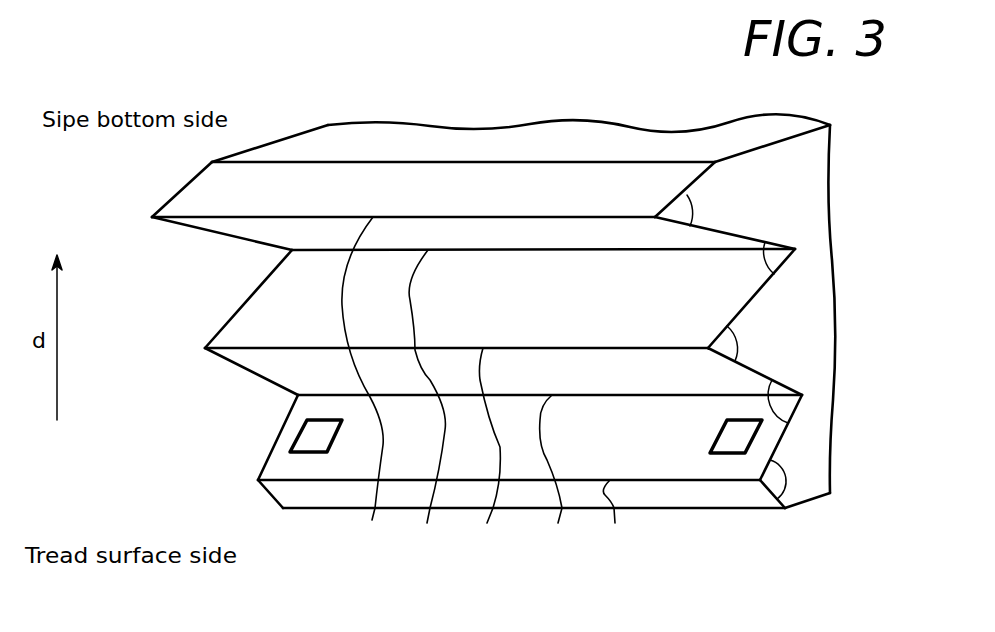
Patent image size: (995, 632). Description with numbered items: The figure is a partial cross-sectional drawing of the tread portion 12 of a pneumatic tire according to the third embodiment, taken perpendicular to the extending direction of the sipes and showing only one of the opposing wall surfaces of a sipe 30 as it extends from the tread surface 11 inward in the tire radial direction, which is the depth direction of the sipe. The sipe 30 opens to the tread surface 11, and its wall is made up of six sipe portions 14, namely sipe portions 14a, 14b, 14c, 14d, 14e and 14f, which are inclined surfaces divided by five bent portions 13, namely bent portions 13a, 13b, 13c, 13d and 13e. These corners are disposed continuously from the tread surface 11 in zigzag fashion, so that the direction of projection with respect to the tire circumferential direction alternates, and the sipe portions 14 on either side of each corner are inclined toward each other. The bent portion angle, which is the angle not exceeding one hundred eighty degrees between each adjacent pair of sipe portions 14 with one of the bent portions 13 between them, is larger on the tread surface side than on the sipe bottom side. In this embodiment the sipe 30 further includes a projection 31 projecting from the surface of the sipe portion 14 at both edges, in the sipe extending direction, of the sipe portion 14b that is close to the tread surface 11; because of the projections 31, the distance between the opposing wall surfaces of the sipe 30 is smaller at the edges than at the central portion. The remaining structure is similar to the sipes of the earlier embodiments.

The tread portion 12 is at (803, 221).
The sipe 30 is at (540, 194).
The sipe portion 14 is at (123, 533).
The sipe portion 14a is at (275, 492).
The sipe portion 14b is at (290, 440).
The sipe portion 14c is at (284, 370).
The sipe portion 14d is at (278, 298).
The sipe portion 14e is at (250, 230).
The sipe portion 14f is at (220, 190).
The bent portion 13 is at (337, 557).
The bent portion 13a is at (609, 518).
The bent portion 13b is at (553, 475).
The bent portion 13c is at (485, 452).
The bent portion 13d is at (425, 403).
The bent portion 13e is at (364, 386).
The projection 31 is at (313, 445).
The tread surface 11 is at (647, 510).